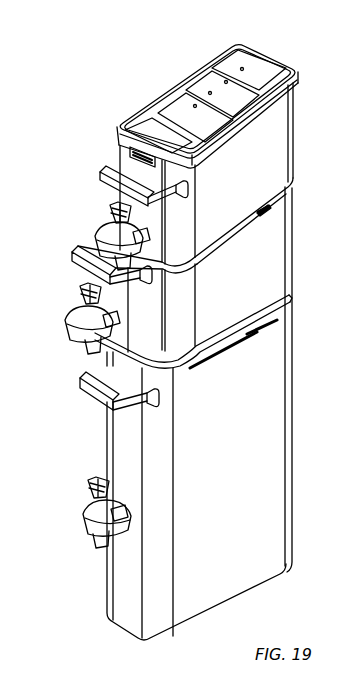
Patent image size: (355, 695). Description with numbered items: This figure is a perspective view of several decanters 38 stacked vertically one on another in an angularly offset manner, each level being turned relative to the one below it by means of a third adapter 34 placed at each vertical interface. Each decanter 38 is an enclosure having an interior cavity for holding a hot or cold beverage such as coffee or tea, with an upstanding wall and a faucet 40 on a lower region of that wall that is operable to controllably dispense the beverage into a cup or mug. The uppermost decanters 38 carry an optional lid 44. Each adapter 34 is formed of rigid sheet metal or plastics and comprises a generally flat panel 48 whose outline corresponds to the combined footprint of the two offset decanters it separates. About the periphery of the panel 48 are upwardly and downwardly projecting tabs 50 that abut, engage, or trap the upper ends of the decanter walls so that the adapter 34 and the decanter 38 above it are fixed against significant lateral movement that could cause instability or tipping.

The third adapter 34 is at (242, 230).
The decanter 38 is at (298, 131).
The faucet 40 is at (97, 232).
The lid 44 is at (202, 62).
The panel 48 is at (204, 340).
The tabs 50 is at (215, 232).